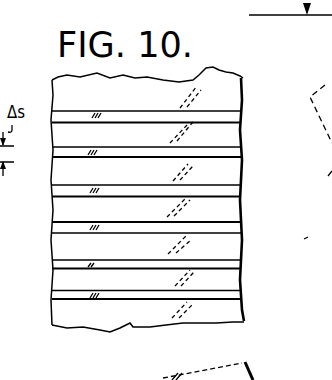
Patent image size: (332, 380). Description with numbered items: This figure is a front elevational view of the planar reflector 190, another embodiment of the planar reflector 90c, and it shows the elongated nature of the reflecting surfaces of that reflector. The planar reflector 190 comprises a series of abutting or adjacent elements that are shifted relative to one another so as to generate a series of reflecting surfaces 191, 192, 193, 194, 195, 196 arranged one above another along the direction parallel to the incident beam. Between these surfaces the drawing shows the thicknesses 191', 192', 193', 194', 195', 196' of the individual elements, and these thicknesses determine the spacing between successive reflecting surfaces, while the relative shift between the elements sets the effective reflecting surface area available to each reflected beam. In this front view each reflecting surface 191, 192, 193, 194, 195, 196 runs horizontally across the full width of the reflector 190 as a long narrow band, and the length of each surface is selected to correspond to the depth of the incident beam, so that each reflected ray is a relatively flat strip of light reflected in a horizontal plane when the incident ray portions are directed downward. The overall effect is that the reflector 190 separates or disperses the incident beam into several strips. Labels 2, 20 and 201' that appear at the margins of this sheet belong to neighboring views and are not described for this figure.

The planar reflector 190 is at (42, 287).
The reflecting surface 191 is at (133, 93).
The thickness of element 191' is at (175, 124).
The reflecting surface 192 is at (175, 145).
The thickness of element 192' is at (146, 167).
The reflecting surface 193 is at (175, 174).
The thickness of element 193' is at (146, 204).
The reflecting surface 194 is at (175, 210).
The thickness of element 194' is at (146, 240).
The reflecting surface 195 is at (175, 242).
The thickness of element 195' is at (178, 265).
The reflecting surface 196 is at (175, 286).
The thickness of element 196' is at (178, 310).
The planar reflector 90c is at (331, 90).
The adjacent figure element 20 is at (318, 211).
The adjacent figure element 201' is at (243, 371).
The adjacent figure element 2 is at (6, 100).